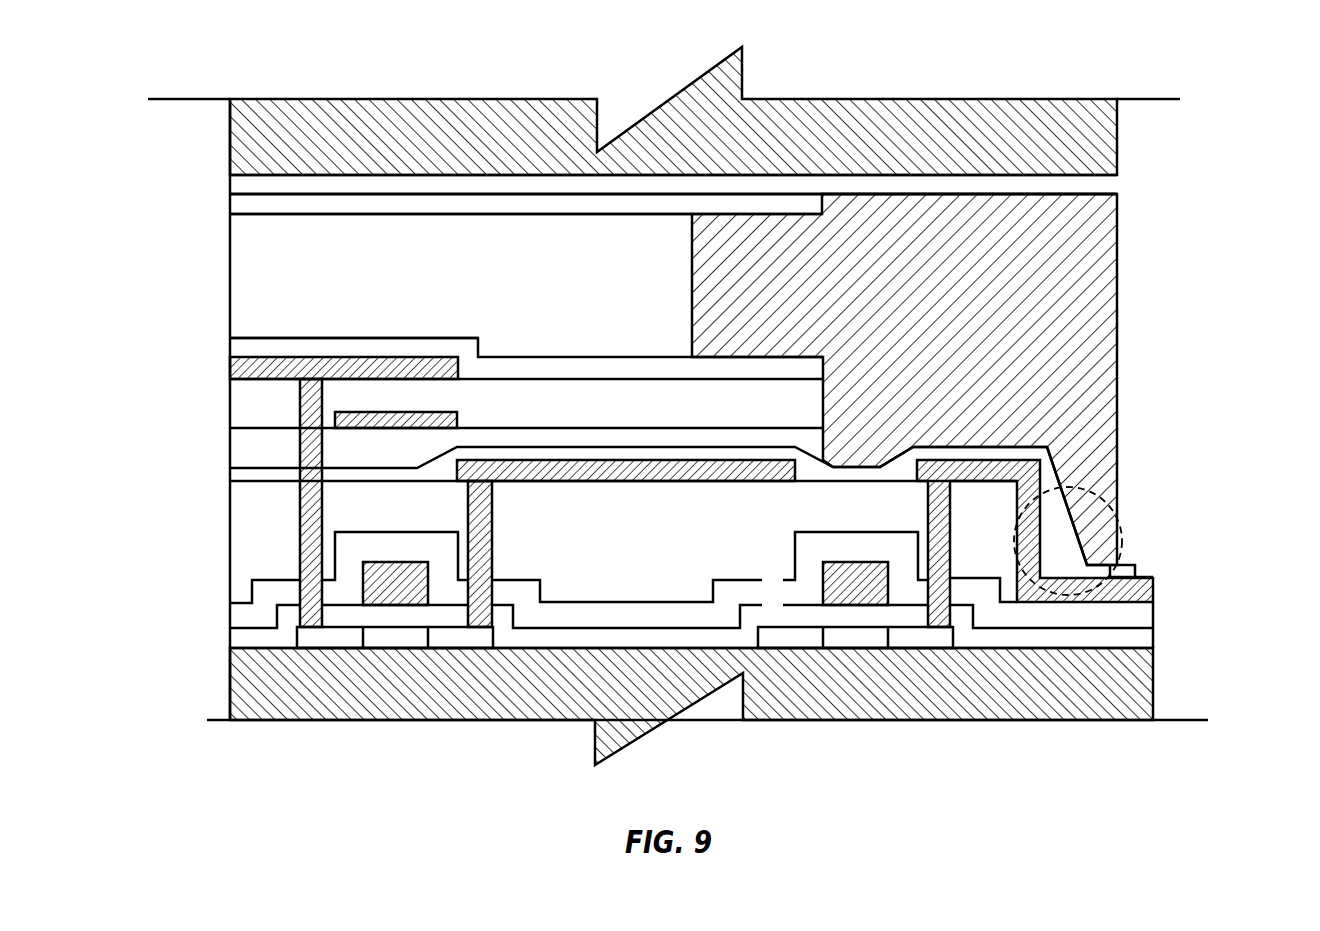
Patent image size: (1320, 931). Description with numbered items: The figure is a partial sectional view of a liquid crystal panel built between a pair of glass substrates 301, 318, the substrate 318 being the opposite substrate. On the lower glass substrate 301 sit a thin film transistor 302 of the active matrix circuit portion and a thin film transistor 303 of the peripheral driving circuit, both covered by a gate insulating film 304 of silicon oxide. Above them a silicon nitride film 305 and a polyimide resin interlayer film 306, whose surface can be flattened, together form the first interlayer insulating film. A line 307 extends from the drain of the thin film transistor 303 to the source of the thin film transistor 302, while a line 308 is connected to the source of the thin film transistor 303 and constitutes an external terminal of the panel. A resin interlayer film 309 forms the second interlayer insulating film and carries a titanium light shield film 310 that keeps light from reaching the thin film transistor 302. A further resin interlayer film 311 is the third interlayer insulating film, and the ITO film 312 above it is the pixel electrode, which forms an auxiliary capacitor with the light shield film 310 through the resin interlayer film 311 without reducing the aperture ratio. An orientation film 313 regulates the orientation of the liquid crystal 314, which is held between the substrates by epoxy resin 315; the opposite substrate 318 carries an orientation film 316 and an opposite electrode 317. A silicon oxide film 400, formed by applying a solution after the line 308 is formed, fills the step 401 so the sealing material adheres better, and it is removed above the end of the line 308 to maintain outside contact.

The glass substrate 301 is at (587, 713).
The thin film transistor 302 is at (298, 727).
The thin film transistor 303 is at (758, 727).
The gate insulating film 304 is at (233, 637).
The silicon nitride film 305 is at (233, 612).
The resin interlayer film 306 is at (230, 557).
The line 307 is at (702, 460).
The line 308 is at (1150, 577).
The resin interlayer film 309 is at (230, 460).
The light shield film 310 is at (440, 410).
The resin interlayer film 311 is at (230, 402).
The ITO film 312 is at (358, 358).
The orientation film 313 is at (432, 338).
The liquid crystal 314 is at (230, 290).
The epoxy resin 315 is at (1113, 243).
The orientation film 316 is at (230, 207).
The opposite electrode 317 is at (230, 187).
The glass substrate 318 is at (230, 112).
The silicon oxide film 400 is at (1073, 452).
The step 401 is at (1123, 503).